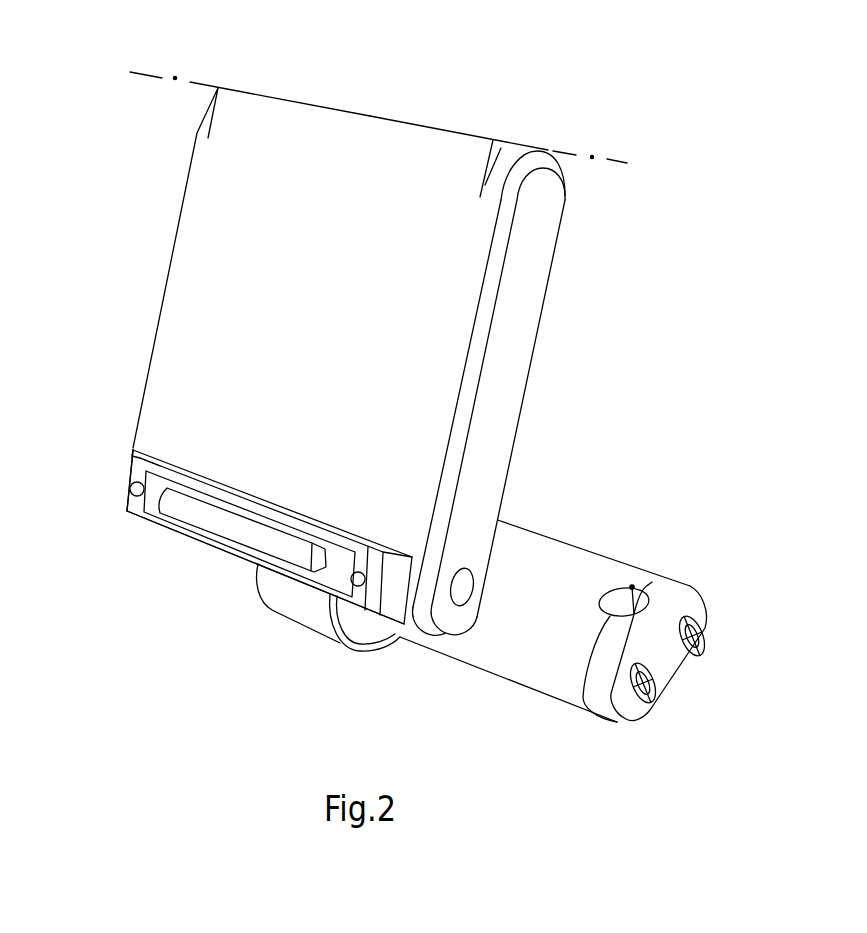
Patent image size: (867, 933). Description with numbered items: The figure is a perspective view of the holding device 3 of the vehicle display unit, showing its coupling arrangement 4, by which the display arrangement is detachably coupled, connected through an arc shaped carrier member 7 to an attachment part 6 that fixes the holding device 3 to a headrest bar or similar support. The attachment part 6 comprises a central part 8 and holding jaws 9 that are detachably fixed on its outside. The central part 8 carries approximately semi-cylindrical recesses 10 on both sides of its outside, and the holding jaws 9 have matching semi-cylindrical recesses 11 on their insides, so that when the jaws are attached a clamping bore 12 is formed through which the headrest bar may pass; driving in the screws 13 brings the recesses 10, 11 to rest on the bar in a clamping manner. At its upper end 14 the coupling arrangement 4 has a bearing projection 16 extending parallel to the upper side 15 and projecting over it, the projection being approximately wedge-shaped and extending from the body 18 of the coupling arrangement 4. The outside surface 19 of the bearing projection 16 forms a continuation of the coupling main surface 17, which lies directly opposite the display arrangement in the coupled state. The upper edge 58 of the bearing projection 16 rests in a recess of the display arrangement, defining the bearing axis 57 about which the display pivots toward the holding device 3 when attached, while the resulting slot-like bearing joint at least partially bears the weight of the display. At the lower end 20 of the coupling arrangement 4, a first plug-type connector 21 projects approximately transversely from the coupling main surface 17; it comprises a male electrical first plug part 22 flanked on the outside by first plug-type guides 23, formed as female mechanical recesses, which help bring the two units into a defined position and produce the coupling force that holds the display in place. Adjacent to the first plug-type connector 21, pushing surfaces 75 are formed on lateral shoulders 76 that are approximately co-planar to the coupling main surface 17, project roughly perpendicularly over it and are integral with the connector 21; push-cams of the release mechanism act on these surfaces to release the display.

The holding device 3 is at (192, 583).
The coupling arrangement 4 is at (143, 310).
The attachment part 6 is at (428, 675).
The arc shaped carrier member 7 is at (282, 607).
The central part 8 is at (507, 660).
The holding jaws 9 is at (597, 703).
The semi-cylindrical recesses 10 is at (613, 598).
The semi-cylindrical recesses 11 is at (640, 593).
The clamping bore 12 is at (632, 585).
The screws 13 is at (703, 645).
The upper end 14 is at (562, 152).
The upper side 15 is at (513, 150).
The bearing projection 16 is at (347, 123).
The coupling main surface 17 is at (395, 268).
The body 18 is at (530, 318).
The outside surface 19 is at (441, 140).
The lower end 20 is at (181, 561).
The first plug-type connector 21 is at (120, 482).
The first plug part 22 is at (233, 540).
The first plug-type guides 23 is at (134, 496).
The bearing axis 57 is at (155, 72).
The upper edge 58 is at (388, 120).
The pushing surfaces 75 is at (129, 442).
The lateral shoulders 76 is at (148, 445).